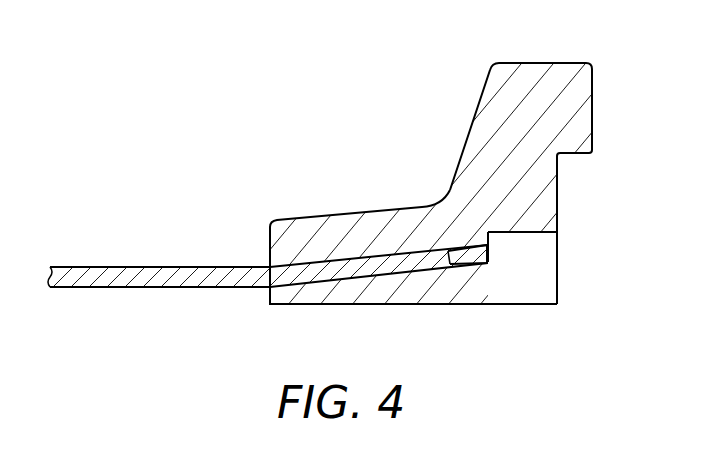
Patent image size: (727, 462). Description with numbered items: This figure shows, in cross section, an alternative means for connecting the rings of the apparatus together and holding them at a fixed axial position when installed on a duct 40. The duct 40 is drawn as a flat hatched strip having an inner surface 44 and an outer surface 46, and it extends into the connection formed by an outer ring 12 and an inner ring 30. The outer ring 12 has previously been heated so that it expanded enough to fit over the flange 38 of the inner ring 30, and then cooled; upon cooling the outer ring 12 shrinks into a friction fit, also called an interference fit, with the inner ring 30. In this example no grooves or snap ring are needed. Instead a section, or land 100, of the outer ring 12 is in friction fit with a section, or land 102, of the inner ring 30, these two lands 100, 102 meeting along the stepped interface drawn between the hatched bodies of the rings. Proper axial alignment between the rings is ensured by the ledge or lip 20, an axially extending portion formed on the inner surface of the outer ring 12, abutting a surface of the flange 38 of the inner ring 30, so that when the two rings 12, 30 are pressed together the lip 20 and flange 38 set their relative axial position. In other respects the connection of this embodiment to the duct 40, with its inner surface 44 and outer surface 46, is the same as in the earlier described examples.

The outer ring 12 is at (545, 70).
The ledge or lip 20 is at (487, 243).
The inner ring 30 is at (500, 300).
The flange 38 is at (523, 255).
The duct 40 is at (105, 278).
The inner surface of duct 44 is at (224, 292).
The outer surface of duct 46 is at (188, 263).
The land of outer ring 100 is at (538, 230).
The land of inner ring 102 is at (535, 236).